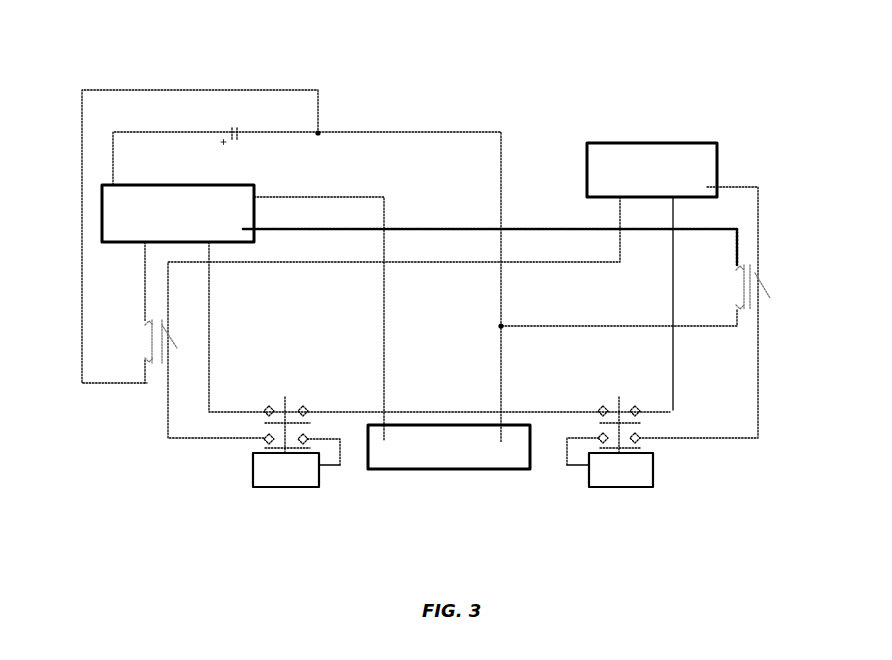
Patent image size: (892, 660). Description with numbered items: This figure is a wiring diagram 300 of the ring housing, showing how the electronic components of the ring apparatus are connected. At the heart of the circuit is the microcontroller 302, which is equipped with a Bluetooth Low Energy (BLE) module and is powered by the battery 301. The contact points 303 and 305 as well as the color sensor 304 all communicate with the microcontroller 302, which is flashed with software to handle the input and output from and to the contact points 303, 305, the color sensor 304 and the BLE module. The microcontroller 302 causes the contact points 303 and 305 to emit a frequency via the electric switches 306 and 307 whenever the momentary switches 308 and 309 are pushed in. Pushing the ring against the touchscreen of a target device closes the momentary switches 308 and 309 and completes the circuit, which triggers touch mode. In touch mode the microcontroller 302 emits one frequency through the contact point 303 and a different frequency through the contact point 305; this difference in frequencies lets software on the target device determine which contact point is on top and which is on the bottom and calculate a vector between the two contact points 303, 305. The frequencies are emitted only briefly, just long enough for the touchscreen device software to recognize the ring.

The circuit system 300 is at (443, 90).
The battery 301 is at (177, 102).
The microcontroller 302 is at (213, 183).
The contact point 303 is at (290, 488).
The color sensor 304 is at (428, 470).
The contact point 305 is at (617, 487).
The electric switch 306 is at (143, 342).
The electric switch 307 is at (735, 290).
The momentary switch 308 is at (285, 397).
The momentary switch 309 is at (618, 397).